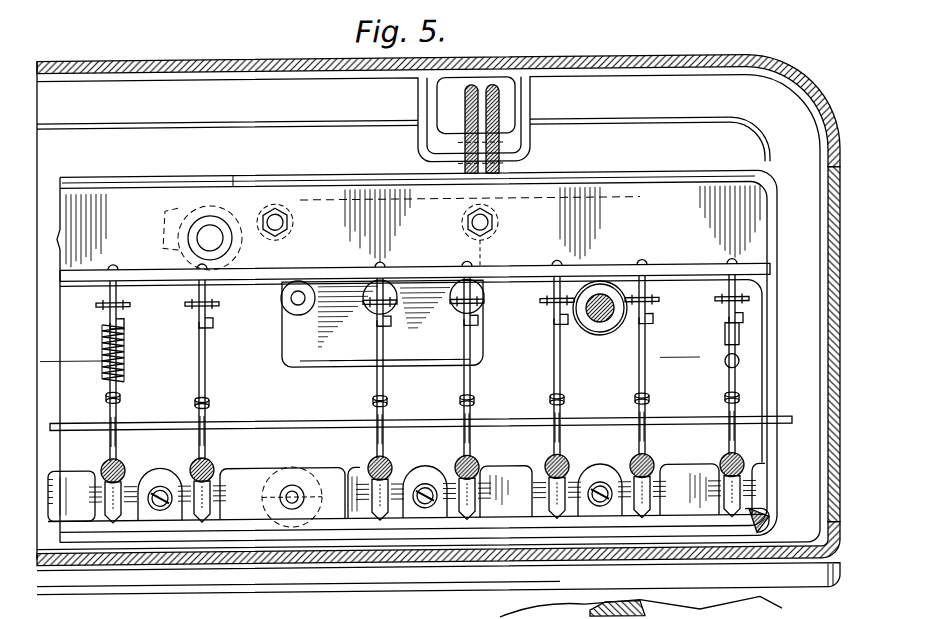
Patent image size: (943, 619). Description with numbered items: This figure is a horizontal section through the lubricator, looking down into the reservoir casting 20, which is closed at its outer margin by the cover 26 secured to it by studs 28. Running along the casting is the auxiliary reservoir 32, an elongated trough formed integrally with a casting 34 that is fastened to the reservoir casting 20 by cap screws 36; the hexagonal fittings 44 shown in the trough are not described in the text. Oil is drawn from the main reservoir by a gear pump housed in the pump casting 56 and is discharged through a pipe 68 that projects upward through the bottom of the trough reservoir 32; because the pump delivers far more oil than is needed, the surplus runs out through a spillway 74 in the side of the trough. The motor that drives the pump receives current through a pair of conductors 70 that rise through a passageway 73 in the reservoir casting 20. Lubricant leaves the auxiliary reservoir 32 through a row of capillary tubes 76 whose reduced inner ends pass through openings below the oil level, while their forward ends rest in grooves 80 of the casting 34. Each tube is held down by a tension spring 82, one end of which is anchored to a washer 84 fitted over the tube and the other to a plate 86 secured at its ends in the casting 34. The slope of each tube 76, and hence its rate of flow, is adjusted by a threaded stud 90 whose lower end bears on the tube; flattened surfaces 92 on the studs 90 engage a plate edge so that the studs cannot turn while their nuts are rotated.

The reservoir casting 20 is at (659, 105).
The cover 26 is at (244, 62).
The studs 28 is at (602, 302).
The auxiliary reservoir 32 is at (652, 192).
The casting 34 is at (152, 480).
The cap screws 36 is at (165, 512).
The nut 44 is at (290, 228).
The pump casting 56 is at (300, 358).
The pipe 68 is at (188, 240).
The conductors 70 is at (494, 93).
The passageway 73 is at (438, 100).
The spillway 74 is at (255, 184).
The tubes 76 is at (200, 408).
The grooves 80 is at (228, 495).
The tension springs 82 is at (196, 404).
The washer 84 is at (120, 308).
The plate 86 is at (350, 428).
The studs 90 is at (208, 466).
The flattened surfaces 92 is at (92, 490).